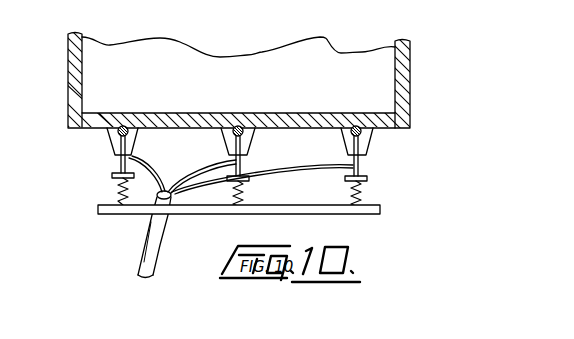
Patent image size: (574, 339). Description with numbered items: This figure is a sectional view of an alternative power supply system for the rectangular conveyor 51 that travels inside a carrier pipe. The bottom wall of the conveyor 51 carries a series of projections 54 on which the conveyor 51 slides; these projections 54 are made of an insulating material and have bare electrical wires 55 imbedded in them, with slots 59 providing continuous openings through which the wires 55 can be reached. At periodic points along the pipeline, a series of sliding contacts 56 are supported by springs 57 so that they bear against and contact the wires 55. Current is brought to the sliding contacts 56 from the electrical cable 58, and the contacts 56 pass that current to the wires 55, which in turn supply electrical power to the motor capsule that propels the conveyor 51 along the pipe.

The conveyor 51 is at (413, 60).
The bare electrical wires 55 is at (354, 126).
The slots 59 is at (229, 143).
The projections 54 is at (110, 140).
The sliding contacts 56 is at (345, 178).
The springs 57 is at (114, 190).
The electrical cable 58 is at (146, 239).